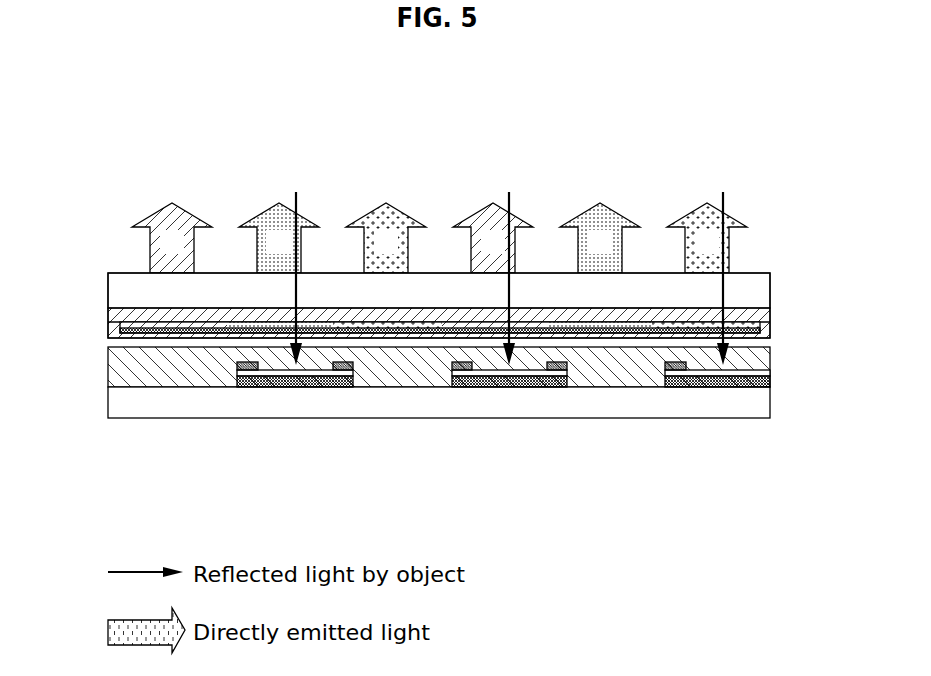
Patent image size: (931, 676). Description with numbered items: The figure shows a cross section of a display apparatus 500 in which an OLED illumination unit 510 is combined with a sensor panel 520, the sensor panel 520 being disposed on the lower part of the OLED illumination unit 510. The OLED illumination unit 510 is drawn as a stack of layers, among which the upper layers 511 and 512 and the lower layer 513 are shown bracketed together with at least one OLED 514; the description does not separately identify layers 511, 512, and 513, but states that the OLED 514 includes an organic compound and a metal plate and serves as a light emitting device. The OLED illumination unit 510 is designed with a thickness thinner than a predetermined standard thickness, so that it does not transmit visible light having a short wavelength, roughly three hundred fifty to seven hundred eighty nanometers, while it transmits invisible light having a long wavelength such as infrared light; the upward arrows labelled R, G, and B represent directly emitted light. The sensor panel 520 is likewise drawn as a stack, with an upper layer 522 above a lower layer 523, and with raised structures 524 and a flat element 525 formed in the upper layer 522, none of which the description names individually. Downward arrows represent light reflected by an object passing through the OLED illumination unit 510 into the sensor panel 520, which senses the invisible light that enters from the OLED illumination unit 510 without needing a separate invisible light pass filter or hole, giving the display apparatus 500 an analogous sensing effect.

The display apparatus 500 is at (455, 110).
The OLED illumination unit 510 is at (440, 300).
The cover layer 511 is at (113, 290).
The polarizing layer 512 is at (113, 315).
The light sensing layer 513 is at (112, 334).
The OLED 514 is at (112, 327).
The sensor panel 520 is at (440, 407).
The pixel layer 522 is at (113, 368).
The substrate 523 is at (112, 403).
The pixel defining layer 524 is at (238, 367).
The light emitting element 525 is at (353, 372).